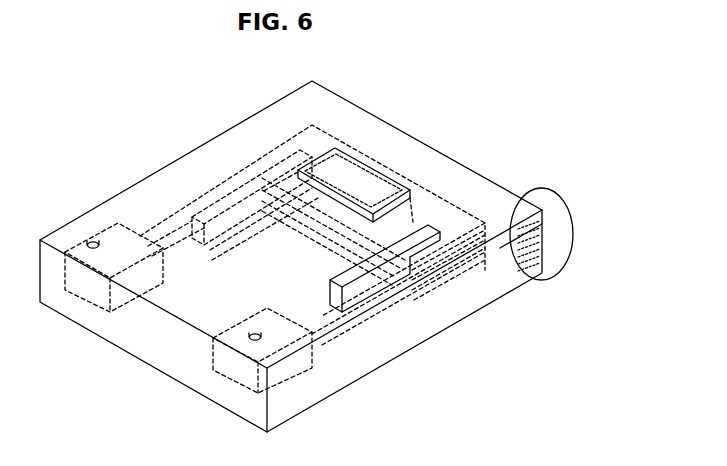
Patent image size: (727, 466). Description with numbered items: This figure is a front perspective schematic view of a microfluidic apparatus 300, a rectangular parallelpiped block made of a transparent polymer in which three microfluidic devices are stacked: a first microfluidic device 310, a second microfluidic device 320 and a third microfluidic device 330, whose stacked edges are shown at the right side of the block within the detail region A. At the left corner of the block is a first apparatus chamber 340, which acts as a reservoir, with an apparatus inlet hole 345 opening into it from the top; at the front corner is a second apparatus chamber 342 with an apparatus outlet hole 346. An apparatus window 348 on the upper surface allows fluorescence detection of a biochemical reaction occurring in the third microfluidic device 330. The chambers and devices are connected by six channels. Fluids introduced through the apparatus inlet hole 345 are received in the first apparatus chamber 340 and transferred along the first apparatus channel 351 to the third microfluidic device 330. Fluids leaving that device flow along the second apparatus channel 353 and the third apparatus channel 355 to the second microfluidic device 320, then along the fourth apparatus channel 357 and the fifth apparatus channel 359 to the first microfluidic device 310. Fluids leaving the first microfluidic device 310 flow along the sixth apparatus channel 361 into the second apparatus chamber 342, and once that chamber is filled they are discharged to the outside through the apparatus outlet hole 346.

The microfluidic apparatus 300 is at (102, 132).
The first microfluidic device 310 is at (452, 280).
The second microfluidic device 320 is at (463, 262).
The third microfluidic device 330 is at (480, 237).
The first apparatus chamber 340 is at (93, 292).
The second apparatus chamber 342 is at (236, 372).
The apparatus inlet hole 345 is at (92, 241).
The apparatus outlet hole 346 is at (255, 333).
The apparatus window 348 is at (366, 194).
The first apparatus channel 351 is at (183, 209).
The second apparatus channel 353 is at (400, 293).
The third apparatus channel 355 is at (357, 290).
The fourth apparatus channel 357 is at (218, 210).
The fifth apparatus channel 359 is at (245, 220).
The sixth apparatus channel 361 is at (342, 330).
The detail region A is at (572, 250).